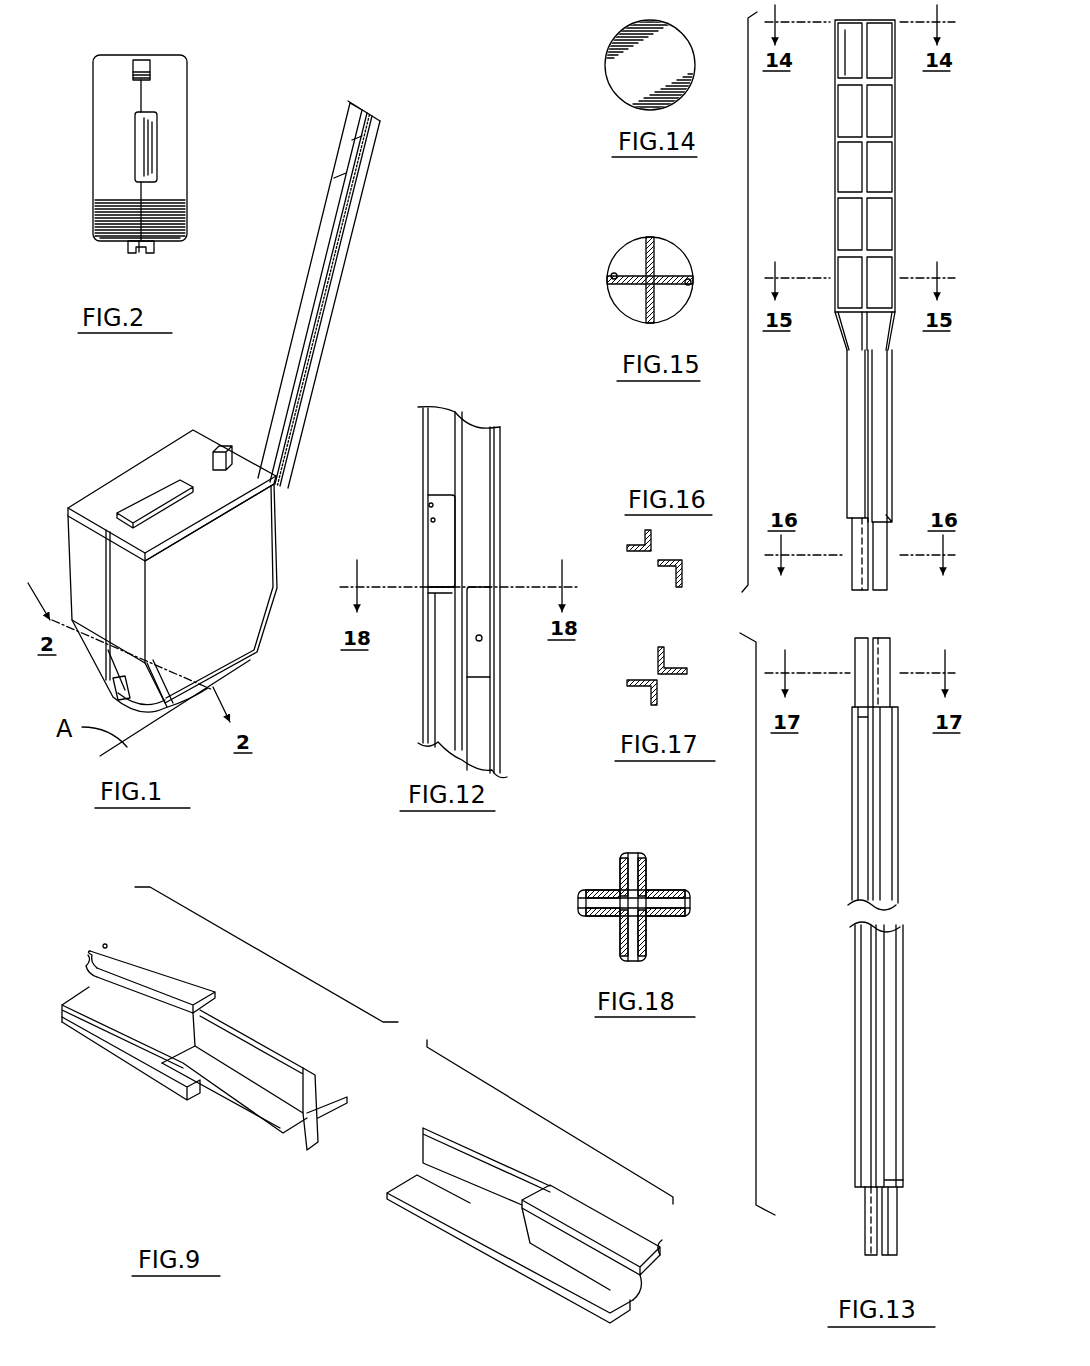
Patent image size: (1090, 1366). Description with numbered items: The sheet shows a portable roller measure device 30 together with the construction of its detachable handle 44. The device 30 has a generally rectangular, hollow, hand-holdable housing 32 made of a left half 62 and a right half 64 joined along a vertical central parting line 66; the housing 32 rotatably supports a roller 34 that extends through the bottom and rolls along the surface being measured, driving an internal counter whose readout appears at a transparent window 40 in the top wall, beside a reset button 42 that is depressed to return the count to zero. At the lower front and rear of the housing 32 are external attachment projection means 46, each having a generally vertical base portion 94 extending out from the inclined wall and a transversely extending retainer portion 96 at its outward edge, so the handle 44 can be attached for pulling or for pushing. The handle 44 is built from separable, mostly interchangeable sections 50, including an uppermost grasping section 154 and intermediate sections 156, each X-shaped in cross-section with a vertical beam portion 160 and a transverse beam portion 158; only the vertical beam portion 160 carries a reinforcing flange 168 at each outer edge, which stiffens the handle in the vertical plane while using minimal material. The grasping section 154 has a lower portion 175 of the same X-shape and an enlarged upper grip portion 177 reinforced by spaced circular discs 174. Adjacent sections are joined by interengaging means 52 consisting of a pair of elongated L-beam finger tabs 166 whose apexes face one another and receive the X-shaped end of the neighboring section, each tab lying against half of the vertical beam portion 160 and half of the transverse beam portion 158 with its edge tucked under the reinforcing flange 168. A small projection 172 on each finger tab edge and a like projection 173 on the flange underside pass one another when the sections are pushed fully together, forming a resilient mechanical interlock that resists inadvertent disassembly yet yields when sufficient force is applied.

In FIG. 1, the roller measure device 30 is at (183, 571).
In FIG. 2, the housing 32 is at (190, 82).
In FIG. 1, the housing 32 is at (260, 650).
In FIG. 1, the roller 34 is at (178, 708).
In FIG. 2, the window 40 is at (150, 142).
In FIG. 1, the window 40 is at (163, 510).
In FIG. 2, the reset button 42 is at (148, 62).
In FIG. 1, the reset button 42 is at (220, 445).
In FIG. 1, the handle 44 is at (358, 213).
In FIG. 2, the external attachment projection means 46 is at (148, 252).
In FIG. 1, the external attachment projection means 46 is at (113, 688).
In FIG. 12, the handle sections 50 is at (454, 565).
In FIG. 13, the handle sections 50 is at (862, 947).
In FIG. 12, the interengaging means 52 is at (462, 592).
In FIG. 16, the interengaging means 52 is at (630, 540).
In FIG. 17, the interengaging means 52 is at (664, 645).
In FIG. 13, the interengaging means 52 is at (848, 574).
In FIG. 9, the interengaging means 52 is at (371, 1123).
In FIG. 1, the left half 62 is at (113, 478).
In FIG. 13, the left half 62 is at (890, 640).
In FIG. 1, the right half 64 is at (242, 574).
In FIG. 1, the vertical central parting line 66 is at (112, 560).
In FIG. 2, the base portion 94 is at (128, 242).
In FIG. 2, the retainer portion 96 is at (138, 254).
In FIG. 13, the grasping section 154 is at (856, 271).
In FIG. 13, the intermediate section 156 is at (848, 862).
In FIG. 12, the transverse beam portion 158 is at (460, 449).
In FIG. 15, the transverse beam portion 158 is at (645, 240).
In FIG. 18, the transverse beam portion 158 is at (636, 856).
In FIG. 13, the transverse beam portion 158 is at (878, 992).
In FIG. 9, the transverse beam portion 158 is at (108, 1022).
In FIG. 15, the vertical beam portion 160 is at (660, 272).
In FIG. 18, the vertical beam portion 160 is at (607, 890).
In FIG. 13, the vertical beam portion 160 is at (888, 1058).
In FIG. 9, the vertical beam portion 160 is at (108, 972).
In FIG. 12, the L-beam finger tabs 166 is at (442, 497).
In FIG. 16, the L-beam finger tabs 166 is at (645, 560).
In FIG. 17, the L-beam finger tabs 166 is at (655, 662).
In FIG. 18, the L-beam finger tabs 166 is at (620, 860).
In FIG. 9, the L-beam finger tabs 166 is at (250, 1065).
In FIG. 12, the reinforcing flange 168 is at (500, 470).
In FIG. 15, the reinforcing flange 168 is at (610, 276).
In FIG. 18, the reinforcing flange 168 is at (577, 897).
In FIG. 13, the reinforcing flange 168 is at (900, 820).
In FIG. 9, the reinforcing flange 168 is at (155, 975).
In FIG. 12, the projection 172 is at (490, 678).
In FIG. 9, the projection 172 is at (285, 1095).
In FIG. 12, the projection 173 is at (483, 637).
In FIG. 9, the projection 173 is at (106, 940).
In FIG. 15, the reinforcing discs 174 is at (632, 295).
In FIG. 13, the reinforcing discs 174 is at (882, 192).
In FIG. 13, the lower portion 175 is at (875, 395).
In FIG. 14, the grip portion 177 is at (600, 46).
In FIG. 13, the grip portion 177 is at (850, 165).